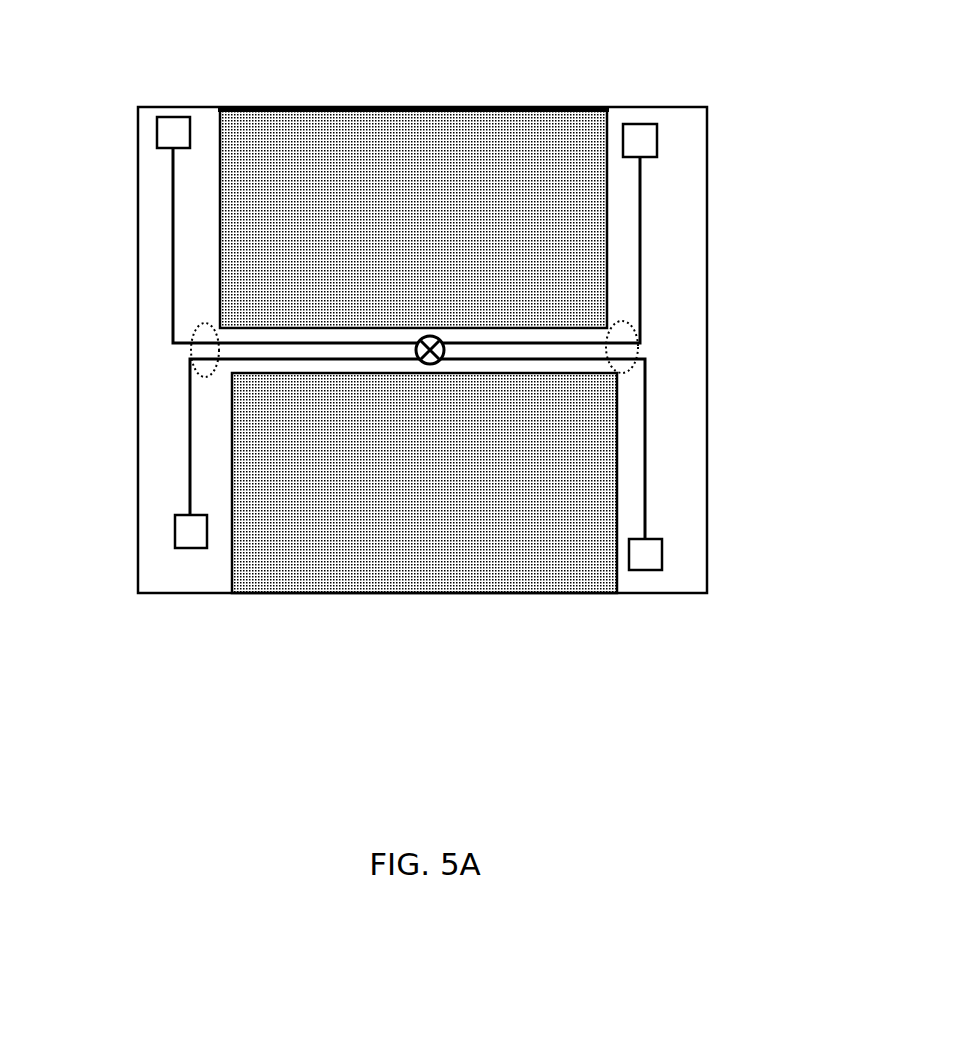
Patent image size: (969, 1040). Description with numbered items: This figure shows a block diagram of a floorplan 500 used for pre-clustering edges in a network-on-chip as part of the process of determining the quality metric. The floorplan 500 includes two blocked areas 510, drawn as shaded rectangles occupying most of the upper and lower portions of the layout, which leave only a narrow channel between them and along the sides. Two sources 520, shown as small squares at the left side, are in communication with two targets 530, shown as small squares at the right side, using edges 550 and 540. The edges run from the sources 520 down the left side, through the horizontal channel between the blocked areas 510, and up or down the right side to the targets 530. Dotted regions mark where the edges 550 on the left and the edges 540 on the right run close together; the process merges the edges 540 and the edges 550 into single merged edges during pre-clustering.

The floorplan 500 is at (422, 311).
The blocked areas 510 is at (441, 507).
The sources 520 is at (153, 129).
The targets 530 is at (646, 121).
The edges 540 is at (628, 315).
The edges 550 is at (191, 332).